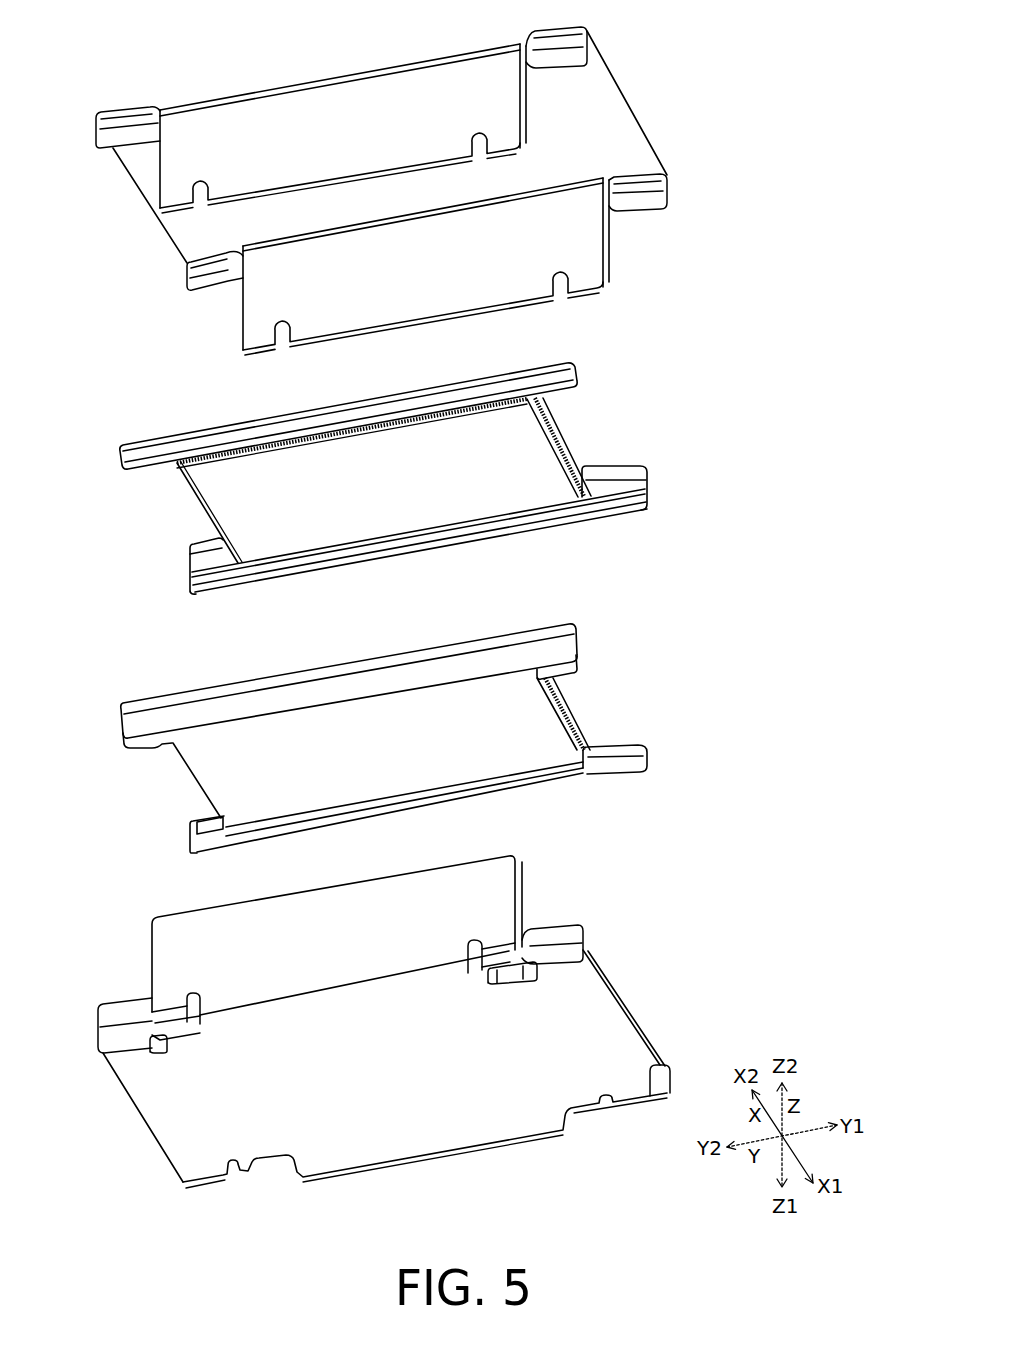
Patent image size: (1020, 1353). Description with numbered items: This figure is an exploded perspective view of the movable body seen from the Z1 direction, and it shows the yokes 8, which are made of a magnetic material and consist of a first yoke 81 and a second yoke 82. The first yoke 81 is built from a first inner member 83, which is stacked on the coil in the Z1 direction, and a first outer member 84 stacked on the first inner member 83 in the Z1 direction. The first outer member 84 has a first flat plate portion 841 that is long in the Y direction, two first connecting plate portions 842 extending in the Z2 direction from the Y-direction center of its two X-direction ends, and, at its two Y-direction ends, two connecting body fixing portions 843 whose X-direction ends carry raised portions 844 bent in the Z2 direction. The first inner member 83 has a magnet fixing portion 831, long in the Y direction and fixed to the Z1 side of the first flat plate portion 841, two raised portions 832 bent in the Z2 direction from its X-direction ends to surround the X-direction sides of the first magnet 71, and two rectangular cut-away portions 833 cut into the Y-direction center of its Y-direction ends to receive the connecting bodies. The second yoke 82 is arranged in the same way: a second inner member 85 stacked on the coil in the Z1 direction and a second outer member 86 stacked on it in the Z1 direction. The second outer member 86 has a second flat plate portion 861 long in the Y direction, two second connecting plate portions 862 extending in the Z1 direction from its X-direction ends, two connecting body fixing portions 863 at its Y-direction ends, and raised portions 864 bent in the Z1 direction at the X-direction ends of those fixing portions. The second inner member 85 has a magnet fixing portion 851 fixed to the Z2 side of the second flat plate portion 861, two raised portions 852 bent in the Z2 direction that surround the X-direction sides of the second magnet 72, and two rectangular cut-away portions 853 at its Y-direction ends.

The yokes 8 is at (813, 803).
The first yoke 81 is at (772, 725).
The second yoke 82 is at (772, 250).
The first inner member 83 is at (640, 782).
The first outer member 84 is at (627, 977).
The second inner member 85 is at (628, 427).
The second outer member 86 is at (683, 120).
The magnet fixing portion 831 is at (267, 766).
The raised portions 832 is at (528, 631).
The cut-away portions 833 is at (567, 670).
The first flat plate portion 841 is at (400, 1107).
The first connecting plate portions 842 is at (433, 880).
The connecting body fixing portions 843 is at (153, 1097).
The raised portions 844 is at (557, 923).
The magnet fixing portion 851 is at (563, 430).
The raised portions 852 is at (191, 446).
The cut-away portions 853 is at (617, 464).
The second flat plate portion 861 is at (344, 193).
The second connecting plate portions 862 is at (414, 107).
The connecting body fixing portions 863 is at (147, 186).
The raised portions 864 is at (113, 124).
The first magnet 71 is at (563, 708).
The second magnet 72 is at (225, 497).